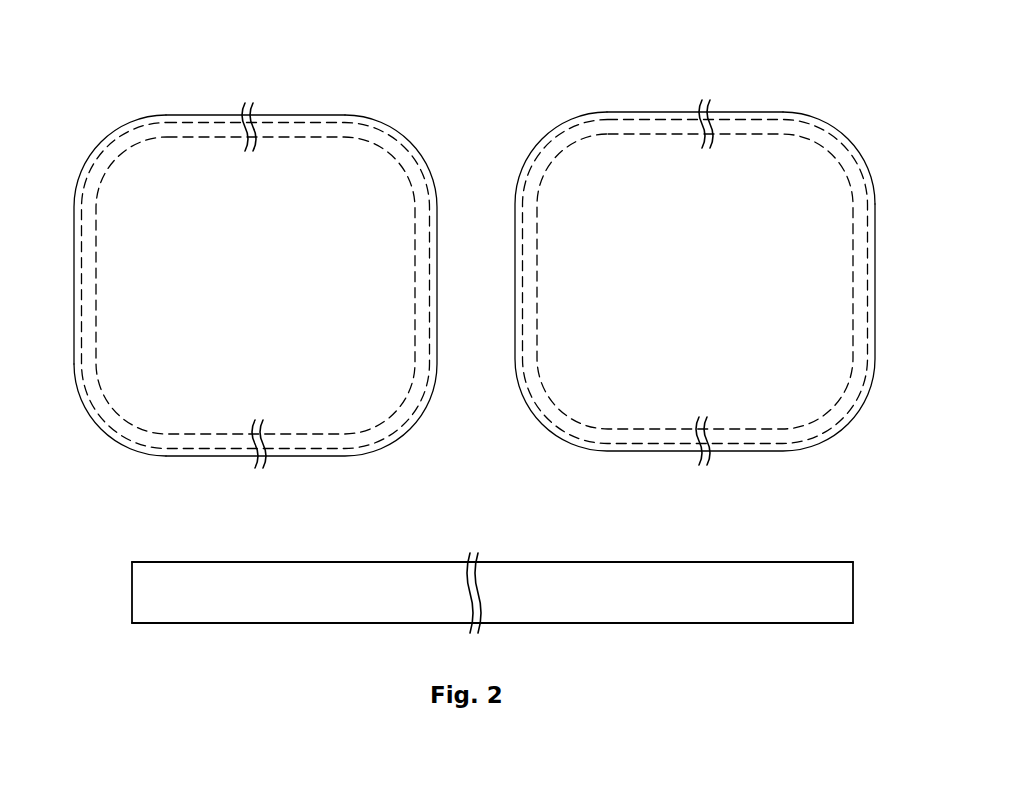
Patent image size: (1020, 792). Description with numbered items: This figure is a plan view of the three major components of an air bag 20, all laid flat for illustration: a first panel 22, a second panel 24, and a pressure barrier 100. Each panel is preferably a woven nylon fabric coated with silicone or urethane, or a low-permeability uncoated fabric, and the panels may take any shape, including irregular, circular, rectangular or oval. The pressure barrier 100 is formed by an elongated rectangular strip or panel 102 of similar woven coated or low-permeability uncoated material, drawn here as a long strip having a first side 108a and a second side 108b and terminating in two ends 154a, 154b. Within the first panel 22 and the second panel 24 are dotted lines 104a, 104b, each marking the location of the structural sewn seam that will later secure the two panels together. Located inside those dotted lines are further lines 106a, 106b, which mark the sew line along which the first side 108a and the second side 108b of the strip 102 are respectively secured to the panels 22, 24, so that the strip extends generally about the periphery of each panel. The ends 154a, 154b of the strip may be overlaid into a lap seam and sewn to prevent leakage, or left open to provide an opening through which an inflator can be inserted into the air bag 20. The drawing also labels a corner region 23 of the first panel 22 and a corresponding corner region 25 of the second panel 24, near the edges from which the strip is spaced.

The air bag 20 is at (385, 112).
The first panel 22 is at (217, 170).
The seal ring corner 23 is at (92, 413).
The second panel 24 is at (670, 173).
The second seal ring corner 25 is at (855, 163).
The pressure barrier 100 is at (308, 580).
The elongated rectangular strip or panel 102 is at (657, 575).
The dotted line 104a is at (396, 157).
The dotted line 104b is at (535, 164).
The line 106a is at (413, 330).
The line 106b is at (544, 378).
The first side 108a is at (752, 562).
The second side 108b is at (773, 626).
The end of the strip 154a is at (132, 608).
The end of the strip 154b is at (837, 597).